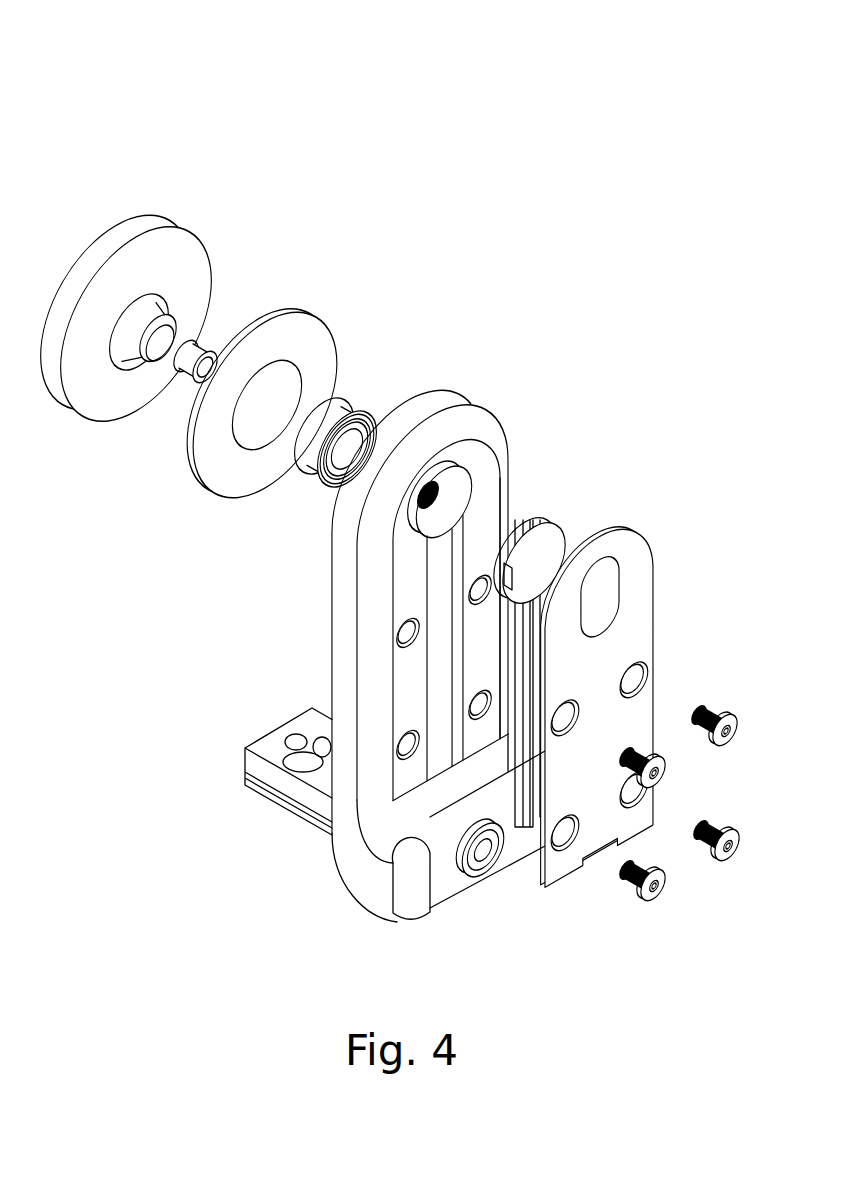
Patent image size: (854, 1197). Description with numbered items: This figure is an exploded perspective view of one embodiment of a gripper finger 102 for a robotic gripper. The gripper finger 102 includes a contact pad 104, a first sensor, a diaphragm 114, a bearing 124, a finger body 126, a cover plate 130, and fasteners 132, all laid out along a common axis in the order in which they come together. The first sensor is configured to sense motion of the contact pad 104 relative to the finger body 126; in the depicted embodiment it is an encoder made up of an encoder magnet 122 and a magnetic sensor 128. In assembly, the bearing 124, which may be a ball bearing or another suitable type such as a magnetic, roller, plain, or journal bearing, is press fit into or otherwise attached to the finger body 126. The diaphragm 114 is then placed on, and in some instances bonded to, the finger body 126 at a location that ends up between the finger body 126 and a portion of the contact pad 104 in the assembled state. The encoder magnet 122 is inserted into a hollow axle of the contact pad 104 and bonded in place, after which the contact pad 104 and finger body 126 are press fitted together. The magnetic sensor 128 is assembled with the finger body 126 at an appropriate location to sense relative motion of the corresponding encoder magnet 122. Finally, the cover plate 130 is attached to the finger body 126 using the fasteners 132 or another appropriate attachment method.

The gripper finger 102 is at (428, 118).
The contact pad 104 is at (178, 230).
The encoder magnet 122 is at (212, 340).
The diaphragm 114 is at (344, 341).
The bearing 124 is at (372, 400).
The finger body 126 is at (526, 455).
The magnetic sensor 128 is at (568, 522).
The cover plate 130 is at (654, 560).
The fasteners 132 is at (718, 697).